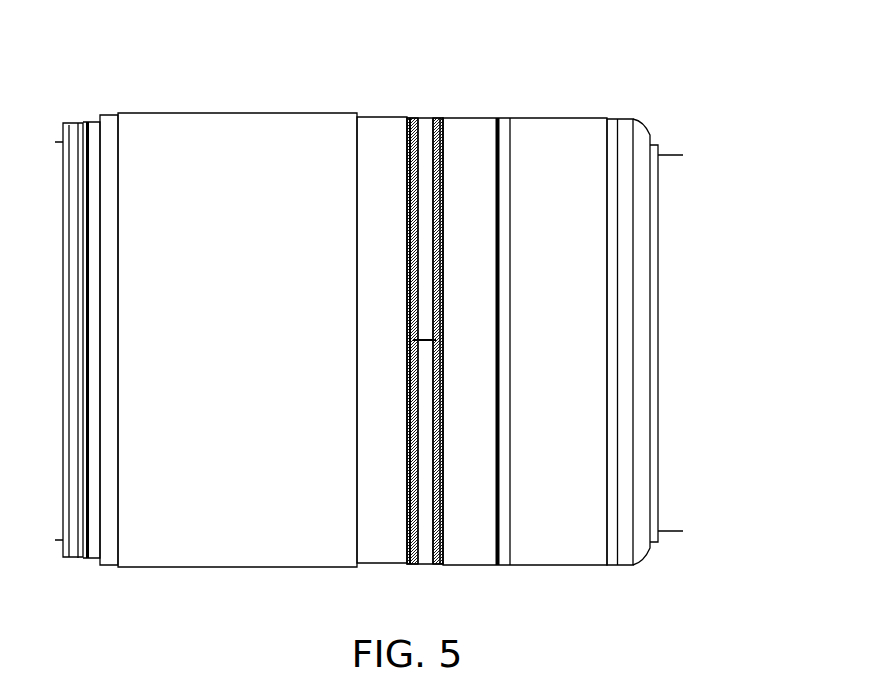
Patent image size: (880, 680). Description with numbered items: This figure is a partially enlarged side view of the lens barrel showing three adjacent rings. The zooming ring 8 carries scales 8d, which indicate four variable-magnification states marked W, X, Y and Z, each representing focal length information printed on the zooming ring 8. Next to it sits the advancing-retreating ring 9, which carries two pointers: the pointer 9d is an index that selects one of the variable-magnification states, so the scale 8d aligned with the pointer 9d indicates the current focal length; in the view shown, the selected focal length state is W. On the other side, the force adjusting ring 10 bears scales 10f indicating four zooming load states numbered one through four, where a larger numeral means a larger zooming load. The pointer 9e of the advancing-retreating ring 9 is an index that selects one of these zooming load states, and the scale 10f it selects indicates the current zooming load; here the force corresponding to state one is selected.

The zooming ring 8 is at (371, 116).
The scales 8d is at (372, 257).
The advancing-retreating ring 9 is at (427, 117).
The pointer 9d is at (430, 340).
The pointer 9e is at (430, 340).
The force adjusting ring 10 is at (473, 118).
The scales 10f is at (463, 373).